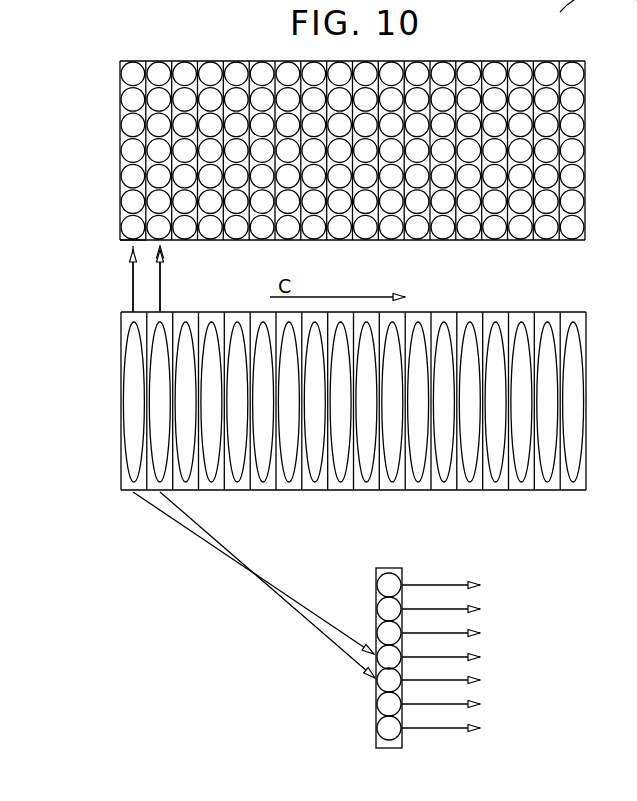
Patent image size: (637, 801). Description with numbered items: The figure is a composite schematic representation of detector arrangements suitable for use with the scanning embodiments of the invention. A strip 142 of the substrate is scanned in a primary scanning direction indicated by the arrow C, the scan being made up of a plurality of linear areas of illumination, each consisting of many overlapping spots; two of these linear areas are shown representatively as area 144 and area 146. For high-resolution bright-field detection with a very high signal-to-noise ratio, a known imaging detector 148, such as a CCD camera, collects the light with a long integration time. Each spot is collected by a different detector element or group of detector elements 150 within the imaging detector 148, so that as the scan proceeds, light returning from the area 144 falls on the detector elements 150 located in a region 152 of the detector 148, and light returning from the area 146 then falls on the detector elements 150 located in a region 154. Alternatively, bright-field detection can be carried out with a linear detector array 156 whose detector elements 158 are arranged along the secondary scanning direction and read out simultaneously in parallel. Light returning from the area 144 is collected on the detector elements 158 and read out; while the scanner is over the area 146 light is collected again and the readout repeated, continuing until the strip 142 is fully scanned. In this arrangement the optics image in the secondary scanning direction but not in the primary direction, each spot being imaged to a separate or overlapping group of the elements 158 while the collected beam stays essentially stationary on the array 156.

The strip 142 is at (303, 396).
The linear area of illumination 144 is at (131, 370).
The linear area of illumination 146 is at (166, 313).
The imaging detector 148 is at (300, 144).
The detector elements 150 is at (160, 76).
The region 152 is at (121, 238).
The region 154 is at (152, 62).
The linear detector array 156 is at (382, 658).
The detector elements 158 is at (392, 574).